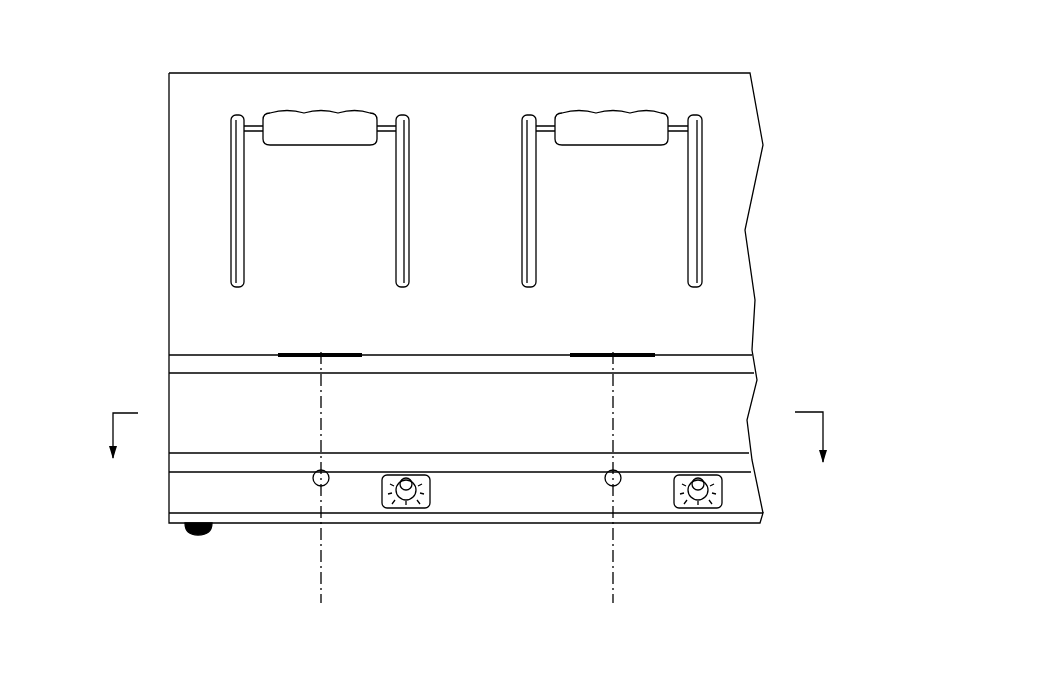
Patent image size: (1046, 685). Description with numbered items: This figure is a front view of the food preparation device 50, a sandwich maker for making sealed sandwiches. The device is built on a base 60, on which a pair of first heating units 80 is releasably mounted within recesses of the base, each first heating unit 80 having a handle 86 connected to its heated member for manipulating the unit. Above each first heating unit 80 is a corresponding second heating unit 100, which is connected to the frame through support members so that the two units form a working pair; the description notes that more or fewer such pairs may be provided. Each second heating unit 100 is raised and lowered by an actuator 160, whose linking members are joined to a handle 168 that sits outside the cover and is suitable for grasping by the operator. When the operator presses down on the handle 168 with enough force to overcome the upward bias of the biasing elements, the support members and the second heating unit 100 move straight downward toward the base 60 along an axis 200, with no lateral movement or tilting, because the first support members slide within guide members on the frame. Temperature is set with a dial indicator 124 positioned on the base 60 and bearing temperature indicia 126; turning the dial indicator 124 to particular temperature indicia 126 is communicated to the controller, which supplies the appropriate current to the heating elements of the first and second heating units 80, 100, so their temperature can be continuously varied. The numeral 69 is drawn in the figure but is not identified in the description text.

The food preparation device 50 is at (139, 87).
The base 60 is at (195, 222).
The handle posts 69 is at (398, 213).
The actuator 160 is at (306, 124).
The handle 168 is at (331, 127).
The second heating unit 100 is at (299, 361).
The first heating unit 80 is at (299, 448).
The handle 86 is at (316, 486).
The dial indicator 124 is at (398, 513).
The temperature indicia 126 is at (421, 503).
The axis 200 is at (318, 580).